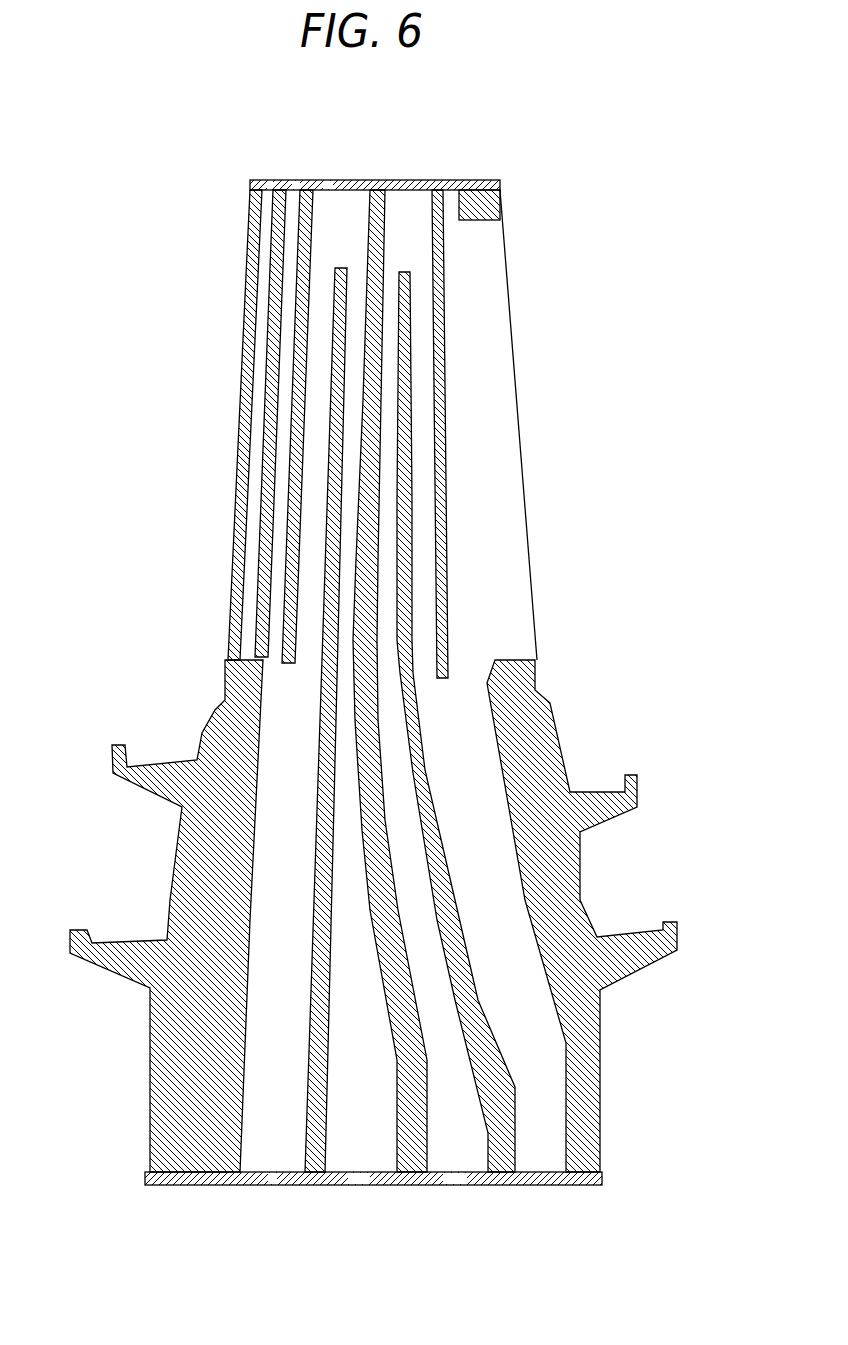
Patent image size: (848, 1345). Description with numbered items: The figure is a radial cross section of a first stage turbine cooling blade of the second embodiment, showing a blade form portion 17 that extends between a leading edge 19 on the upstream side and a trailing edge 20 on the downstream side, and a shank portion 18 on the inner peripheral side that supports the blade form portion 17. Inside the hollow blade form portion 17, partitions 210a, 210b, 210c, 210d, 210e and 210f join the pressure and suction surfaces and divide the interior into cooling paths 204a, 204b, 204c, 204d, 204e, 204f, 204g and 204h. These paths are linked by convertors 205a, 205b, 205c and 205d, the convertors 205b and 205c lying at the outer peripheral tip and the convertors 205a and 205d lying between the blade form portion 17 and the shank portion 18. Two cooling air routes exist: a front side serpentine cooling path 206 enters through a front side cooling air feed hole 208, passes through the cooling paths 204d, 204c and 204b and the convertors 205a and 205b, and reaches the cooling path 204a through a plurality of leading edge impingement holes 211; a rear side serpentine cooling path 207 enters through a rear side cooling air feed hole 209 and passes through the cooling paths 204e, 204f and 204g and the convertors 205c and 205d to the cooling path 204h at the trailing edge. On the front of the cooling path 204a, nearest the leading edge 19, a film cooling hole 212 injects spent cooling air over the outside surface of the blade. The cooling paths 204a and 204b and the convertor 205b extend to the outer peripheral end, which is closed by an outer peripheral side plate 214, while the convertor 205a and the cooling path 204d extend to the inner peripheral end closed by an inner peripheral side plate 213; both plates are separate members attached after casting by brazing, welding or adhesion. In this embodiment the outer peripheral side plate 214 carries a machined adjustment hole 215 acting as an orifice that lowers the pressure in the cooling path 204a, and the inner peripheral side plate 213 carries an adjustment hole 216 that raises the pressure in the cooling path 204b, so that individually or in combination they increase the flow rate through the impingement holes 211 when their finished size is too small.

The blade form portion 17 is at (247, 350).
The shank portion 18 is at (178, 853).
The leading edge 19 is at (233, 567).
The trailing edge 20 is at (514, 366).
The cooling path 204a is at (262, 305).
The cooling path 204b is at (283, 413).
The cooling path 204c is at (313, 470).
The cooling path 204d is at (380, 383).
The cooling path 204e is at (385, 455).
The cooling path 204f is at (425, 545).
The cooling path 204g is at (470, 640).
The cooling path 204h is at (500, 455).
The convertor 205a is at (285, 723).
The convertor 205b is at (343, 237).
The convertor 205c is at (408, 237).
The convertor 205d is at (445, 702).
The front side serpentine cooling path 206 is at (350, 960).
The rear side serpentine cooling path 207 is at (447, 1037).
The front side cooling air feed hole 208 is at (358, 1172).
The rear side cooling air feed hole 209 is at (458, 1172).
The partition 210a is at (282, 233).
The partition 210b is at (307, 205).
The partition 210c is at (340, 267).
The partition 210d is at (392, 228).
The partition 210e is at (420, 290).
The partition 210f is at (443, 330).
The impingement hole 211 is at (255, 657).
The film cooling hole 212 is at (240, 498).
The inner peripheral side plate 213 is at (603, 1178).
The outer peripheral side plate 214 is at (501, 185).
The adjustment hole 215 is at (267, 180).
The adjustment hole 216 is at (273, 1170).